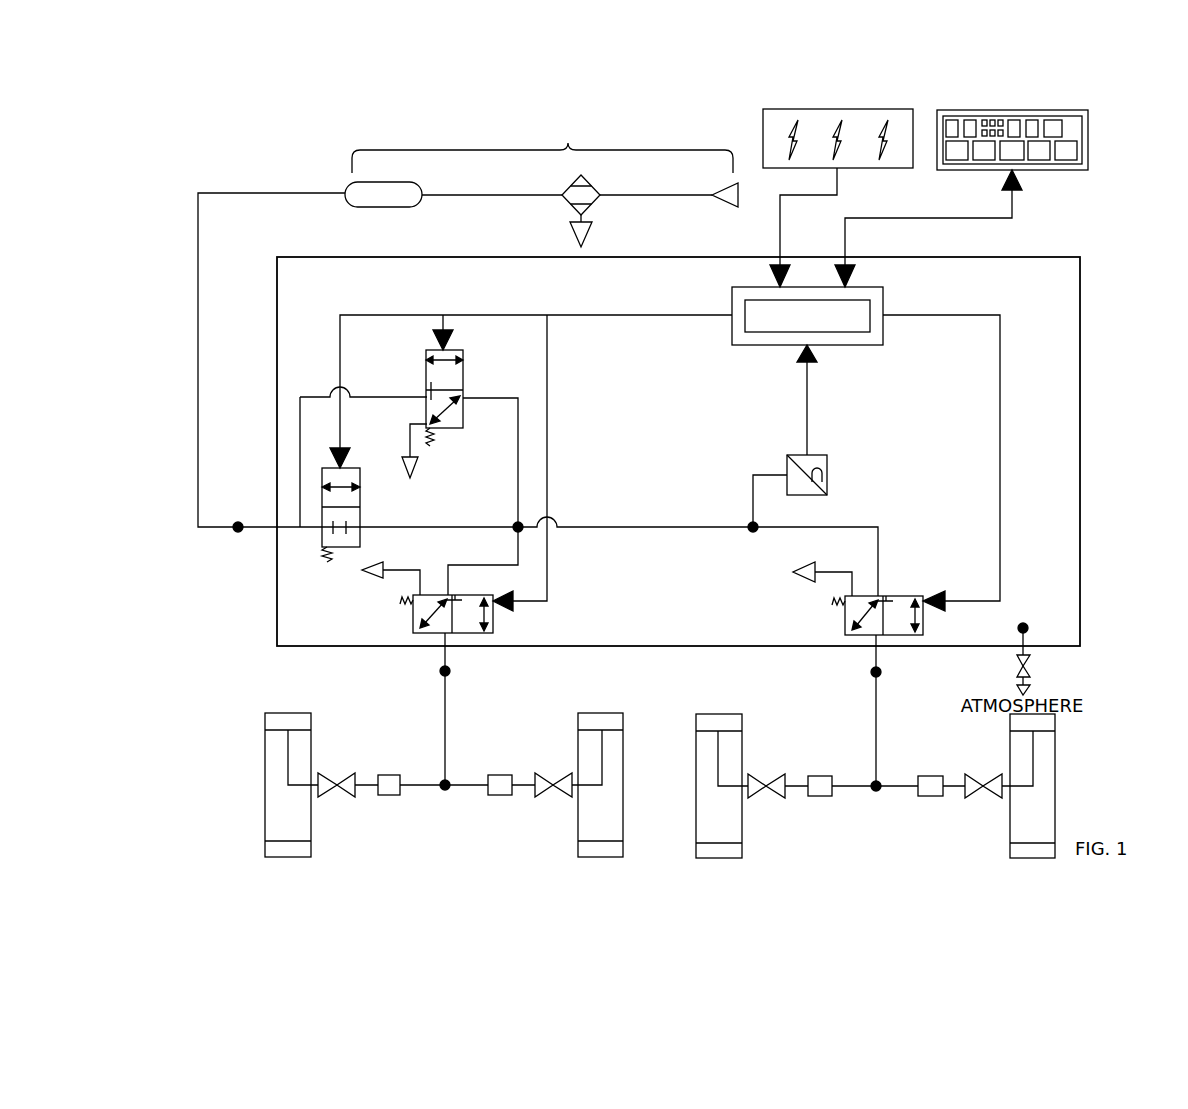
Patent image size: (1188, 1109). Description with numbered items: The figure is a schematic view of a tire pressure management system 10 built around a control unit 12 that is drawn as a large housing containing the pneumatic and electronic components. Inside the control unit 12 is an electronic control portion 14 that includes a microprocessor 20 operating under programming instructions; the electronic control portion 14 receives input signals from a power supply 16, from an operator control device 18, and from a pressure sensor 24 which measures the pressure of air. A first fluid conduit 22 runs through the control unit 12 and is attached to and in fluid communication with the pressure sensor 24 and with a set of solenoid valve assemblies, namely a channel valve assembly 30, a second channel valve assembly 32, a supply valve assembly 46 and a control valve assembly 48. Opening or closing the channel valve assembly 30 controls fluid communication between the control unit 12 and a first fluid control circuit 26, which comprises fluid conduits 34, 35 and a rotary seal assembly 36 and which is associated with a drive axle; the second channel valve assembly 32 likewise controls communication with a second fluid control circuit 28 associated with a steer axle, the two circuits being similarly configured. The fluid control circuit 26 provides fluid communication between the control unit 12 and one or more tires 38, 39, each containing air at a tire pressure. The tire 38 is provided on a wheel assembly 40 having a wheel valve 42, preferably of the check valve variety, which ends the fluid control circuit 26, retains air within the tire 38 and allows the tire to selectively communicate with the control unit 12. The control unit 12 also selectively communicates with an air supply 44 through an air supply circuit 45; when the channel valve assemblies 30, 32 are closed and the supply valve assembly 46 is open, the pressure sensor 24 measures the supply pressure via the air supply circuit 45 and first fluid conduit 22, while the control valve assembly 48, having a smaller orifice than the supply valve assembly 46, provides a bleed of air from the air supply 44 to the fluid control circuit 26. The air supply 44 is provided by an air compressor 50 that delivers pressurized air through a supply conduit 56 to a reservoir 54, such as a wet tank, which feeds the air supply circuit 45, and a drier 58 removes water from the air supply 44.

The tire pressure management system 10 is at (1099, 210).
The control unit 12 is at (1067, 308).
The electronic control portion 14 is at (732, 297).
The power supply 16 is at (838, 109).
The operator control device 18 is at (1010, 110).
The microprocessor 20 is at (870, 305).
The first fluid conduit 22 is at (651, 525).
The pressure sensor 24 is at (787, 460).
The fluid control circuit 26 is at (445, 710).
The second fluid control circuit 28 is at (876, 712).
The channel valve assembly 30 is at (413, 615).
The second channel valve assembly 32 is at (845, 615).
The fluid conduit 34 is at (440, 641).
The fluid conduit 35 is at (447, 728).
The rotary seal assembly 36 is at (388, 796).
The tire 38 is at (260, 760).
The tire 39 is at (593, 713).
The wheel assembly 40 is at (265, 790).
The wheel valve 42 is at (338, 775).
The air supply 44 is at (542, 147).
The air supply circuit 45 is at (198, 362).
The supply valve assembly 46 is at (360, 470).
The control valve assembly 48 is at (463, 420).
The air compressor 50 is at (712, 197).
The reservoir 54 is at (383, 208).
The supply conduit 56 is at (493, 197).
The drier 58 is at (600, 205).